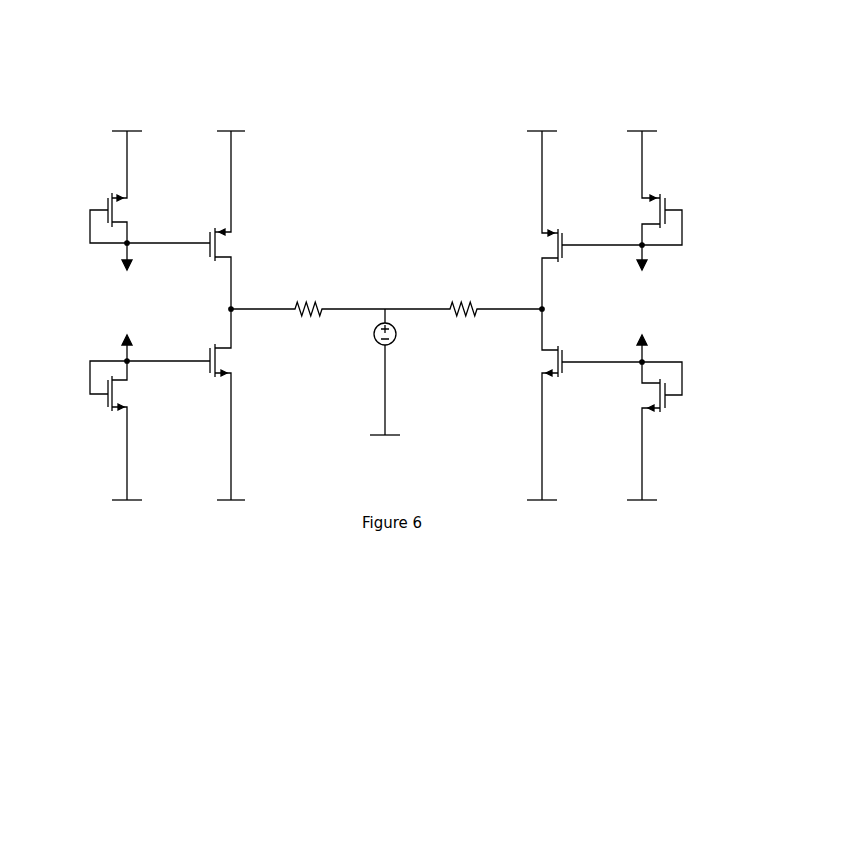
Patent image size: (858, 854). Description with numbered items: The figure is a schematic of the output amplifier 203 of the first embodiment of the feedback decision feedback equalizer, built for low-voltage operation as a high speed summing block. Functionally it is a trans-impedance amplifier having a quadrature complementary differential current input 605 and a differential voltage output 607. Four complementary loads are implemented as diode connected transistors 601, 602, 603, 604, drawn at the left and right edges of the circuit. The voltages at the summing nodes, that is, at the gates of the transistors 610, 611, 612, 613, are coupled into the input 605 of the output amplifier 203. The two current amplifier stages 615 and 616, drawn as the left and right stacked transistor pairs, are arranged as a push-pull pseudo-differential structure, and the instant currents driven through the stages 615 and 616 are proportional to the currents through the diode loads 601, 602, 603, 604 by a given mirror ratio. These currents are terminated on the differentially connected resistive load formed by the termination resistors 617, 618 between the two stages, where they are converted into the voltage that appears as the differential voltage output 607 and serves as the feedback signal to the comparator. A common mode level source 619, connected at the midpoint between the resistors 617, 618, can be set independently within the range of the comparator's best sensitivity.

The output amplifier 203 is at (747, 96).
The diode connected transistor 601 is at (123, 430).
The diode connected transistor 602 is at (124, 187).
The diode connected transistor 603 is at (652, 431).
The diode connected transistor 604 is at (648, 188).
The differential current input 605 is at (122, 258).
The differential voltage output 607 is at (537, 305).
The transistor 610 is at (195, 404).
The transistor 611 is at (194, 220).
The transistor 612 is at (577, 404).
The transistor 613 is at (578, 220).
The current amplifier stage 615 is at (231, 121).
The current amplifier stage 616 is at (542, 120).
The termination resistor 617 is at (308, 299).
The termination resistor 618 is at (463, 299).
The common mode level source 619 is at (396, 372).